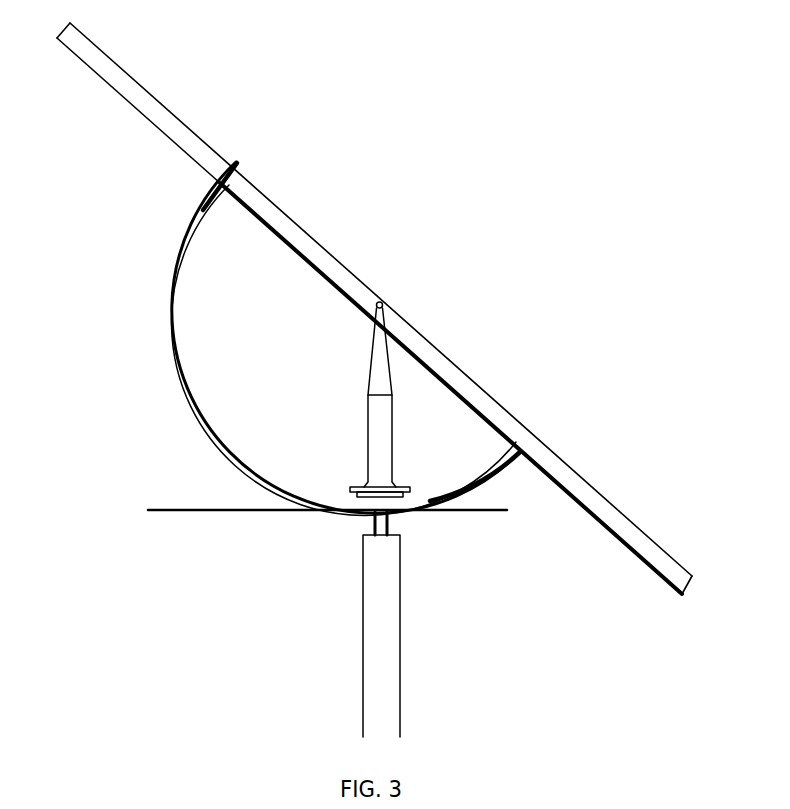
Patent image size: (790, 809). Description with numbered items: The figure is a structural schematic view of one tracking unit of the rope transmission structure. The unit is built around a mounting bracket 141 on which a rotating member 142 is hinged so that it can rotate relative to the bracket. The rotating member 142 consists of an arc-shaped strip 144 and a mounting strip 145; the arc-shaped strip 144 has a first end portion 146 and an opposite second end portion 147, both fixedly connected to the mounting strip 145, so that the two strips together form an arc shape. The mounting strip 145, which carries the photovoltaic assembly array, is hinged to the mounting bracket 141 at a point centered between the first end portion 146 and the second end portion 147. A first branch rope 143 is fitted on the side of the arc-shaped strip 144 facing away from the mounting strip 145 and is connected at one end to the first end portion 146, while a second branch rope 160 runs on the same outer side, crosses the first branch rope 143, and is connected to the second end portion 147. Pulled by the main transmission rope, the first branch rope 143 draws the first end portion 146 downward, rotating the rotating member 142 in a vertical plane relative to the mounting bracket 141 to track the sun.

The mounting bracket 141 is at (381, 371).
The rotating member 142 is at (374, 308).
The first branch rope 143 is at (222, 511).
The arc-shaped strip 144 is at (193, 347).
The mounting strip 145 is at (315, 258).
The first end portion 146 is at (507, 447).
The second end portion 147 is at (214, 196).
The second branch rope 160 is at (453, 511).